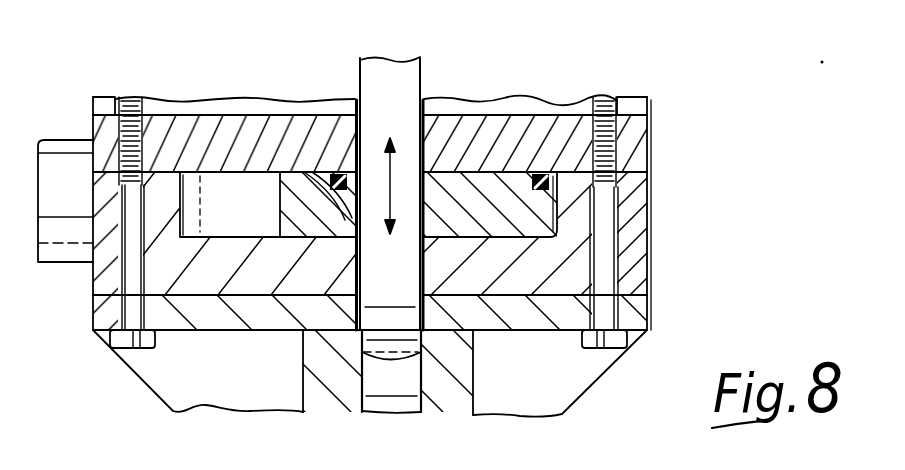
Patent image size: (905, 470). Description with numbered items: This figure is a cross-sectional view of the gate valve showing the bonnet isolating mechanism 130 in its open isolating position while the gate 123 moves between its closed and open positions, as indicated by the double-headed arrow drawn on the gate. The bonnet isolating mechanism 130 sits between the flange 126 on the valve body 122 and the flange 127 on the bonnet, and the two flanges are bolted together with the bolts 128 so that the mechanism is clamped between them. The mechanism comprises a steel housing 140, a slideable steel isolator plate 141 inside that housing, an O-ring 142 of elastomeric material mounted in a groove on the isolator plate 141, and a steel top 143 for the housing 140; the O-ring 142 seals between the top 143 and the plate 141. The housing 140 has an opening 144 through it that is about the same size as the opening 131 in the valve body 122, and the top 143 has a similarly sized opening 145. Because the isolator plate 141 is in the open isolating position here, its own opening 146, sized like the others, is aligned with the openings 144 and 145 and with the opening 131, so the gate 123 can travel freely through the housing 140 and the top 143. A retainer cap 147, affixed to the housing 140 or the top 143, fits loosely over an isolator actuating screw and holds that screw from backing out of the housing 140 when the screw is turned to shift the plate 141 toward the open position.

The valve body 122 is at (580, 412).
The gate 123 is at (422, 80).
The flange 126 is at (92, 312).
The flange 127 is at (102, 97).
The bolts 128 is at (131, 350).
The bonnet isolating mechanism 130 is at (86, 115).
The opening 131 is at (388, 400).
The housing 140 is at (650, 280).
The isolator plate 141 is at (545, 220).
The O-ring 142 is at (337, 176).
The top 143 is at (636, 134).
The opening 144 is at (302, 331).
The opening 145 is at (453, 112).
The opening 146 is at (312, 172).
The retainer cap 147 is at (40, 140).